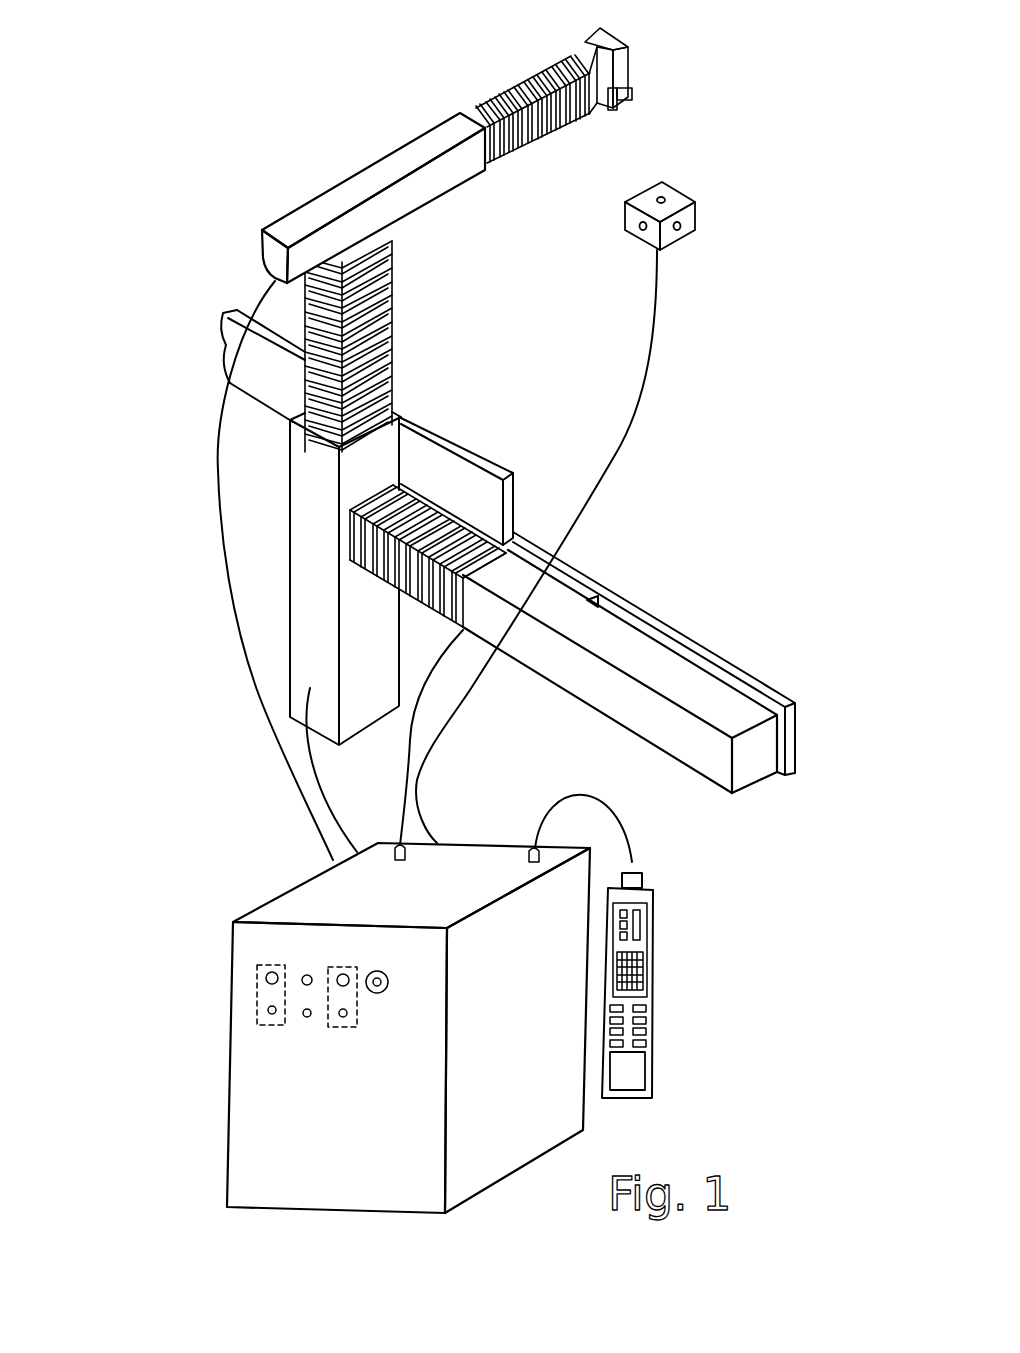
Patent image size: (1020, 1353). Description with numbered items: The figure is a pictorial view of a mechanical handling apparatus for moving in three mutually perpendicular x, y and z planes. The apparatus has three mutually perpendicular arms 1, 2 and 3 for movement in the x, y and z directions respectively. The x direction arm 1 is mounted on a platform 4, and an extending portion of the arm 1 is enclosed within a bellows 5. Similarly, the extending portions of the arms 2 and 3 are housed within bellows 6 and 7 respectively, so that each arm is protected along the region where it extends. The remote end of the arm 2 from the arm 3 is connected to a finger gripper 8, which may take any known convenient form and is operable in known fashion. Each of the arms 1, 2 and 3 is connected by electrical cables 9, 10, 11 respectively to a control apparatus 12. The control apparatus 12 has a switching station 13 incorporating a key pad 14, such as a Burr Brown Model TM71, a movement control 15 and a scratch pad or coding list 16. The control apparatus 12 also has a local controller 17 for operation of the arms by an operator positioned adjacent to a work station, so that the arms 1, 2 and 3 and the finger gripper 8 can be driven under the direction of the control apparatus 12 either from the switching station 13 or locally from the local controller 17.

The x direction arm 1 is at (657, 725).
The arm 2 is at (343, 197).
The arm 3 is at (315, 537).
The platform 4 is at (748, 678).
The bellows 5 is at (447, 527).
The bellows 6 is at (496, 112).
The bellows 7 is at (362, 343).
The finger gripper 8 is at (632, 100).
The electrical cable 9 is at (417, 717).
The electrical cable 10 is at (248, 678).
The electrical cable 11 is at (318, 793).
The control apparatus 12 is at (268, 1093).
The switching station 13 is at (653, 902).
The key pad 14 is at (643, 945).
The movement control 15 is at (643, 1023).
The scratch pad or coding list 16 is at (632, 1070).
The local controller 17 is at (688, 215).